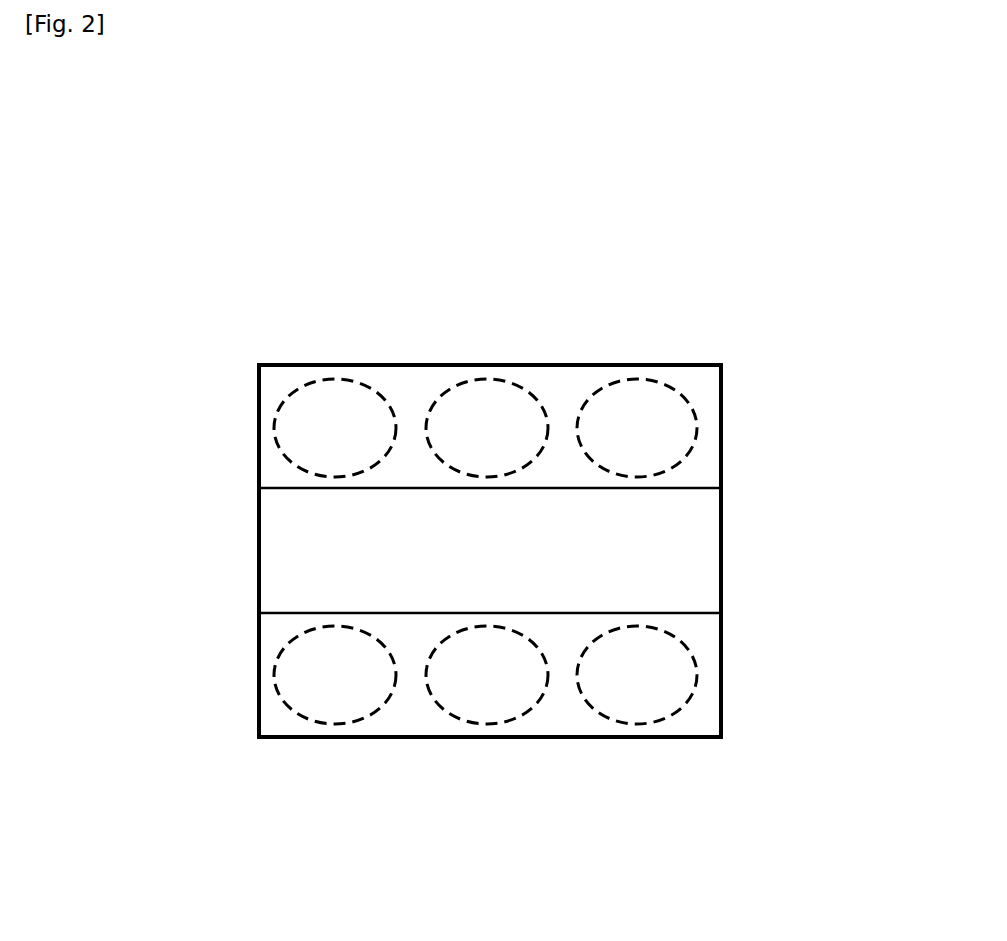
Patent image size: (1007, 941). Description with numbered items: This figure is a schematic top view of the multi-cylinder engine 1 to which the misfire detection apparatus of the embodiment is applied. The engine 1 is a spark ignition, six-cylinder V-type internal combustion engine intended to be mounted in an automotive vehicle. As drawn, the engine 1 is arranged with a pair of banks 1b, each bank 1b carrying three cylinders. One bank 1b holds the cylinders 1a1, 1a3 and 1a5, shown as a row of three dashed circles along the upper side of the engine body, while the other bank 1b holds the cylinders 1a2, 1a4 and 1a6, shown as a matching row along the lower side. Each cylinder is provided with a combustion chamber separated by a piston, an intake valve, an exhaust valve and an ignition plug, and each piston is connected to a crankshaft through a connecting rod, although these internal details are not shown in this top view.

The multi-cylinder engine 1 is at (798, 365).
The bank 1b is at (258, 443).
The cylinder 1a1 is at (341, 378).
The cylinder 1a2 is at (341, 722).
The cylinder 1a3 is at (494, 378).
The cylinder 1a4 is at (494, 722).
The cylinder 1a5 is at (648, 378).
The cylinder 1a6 is at (648, 722).